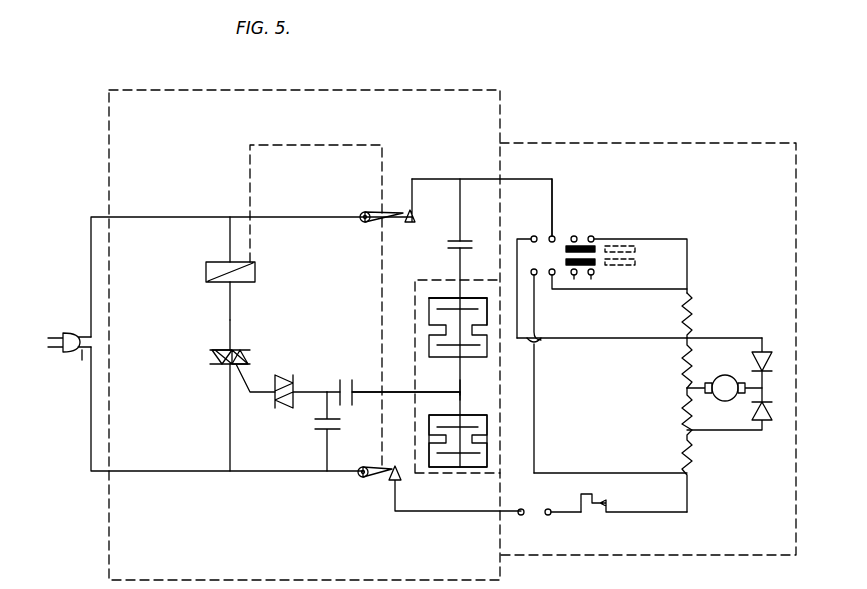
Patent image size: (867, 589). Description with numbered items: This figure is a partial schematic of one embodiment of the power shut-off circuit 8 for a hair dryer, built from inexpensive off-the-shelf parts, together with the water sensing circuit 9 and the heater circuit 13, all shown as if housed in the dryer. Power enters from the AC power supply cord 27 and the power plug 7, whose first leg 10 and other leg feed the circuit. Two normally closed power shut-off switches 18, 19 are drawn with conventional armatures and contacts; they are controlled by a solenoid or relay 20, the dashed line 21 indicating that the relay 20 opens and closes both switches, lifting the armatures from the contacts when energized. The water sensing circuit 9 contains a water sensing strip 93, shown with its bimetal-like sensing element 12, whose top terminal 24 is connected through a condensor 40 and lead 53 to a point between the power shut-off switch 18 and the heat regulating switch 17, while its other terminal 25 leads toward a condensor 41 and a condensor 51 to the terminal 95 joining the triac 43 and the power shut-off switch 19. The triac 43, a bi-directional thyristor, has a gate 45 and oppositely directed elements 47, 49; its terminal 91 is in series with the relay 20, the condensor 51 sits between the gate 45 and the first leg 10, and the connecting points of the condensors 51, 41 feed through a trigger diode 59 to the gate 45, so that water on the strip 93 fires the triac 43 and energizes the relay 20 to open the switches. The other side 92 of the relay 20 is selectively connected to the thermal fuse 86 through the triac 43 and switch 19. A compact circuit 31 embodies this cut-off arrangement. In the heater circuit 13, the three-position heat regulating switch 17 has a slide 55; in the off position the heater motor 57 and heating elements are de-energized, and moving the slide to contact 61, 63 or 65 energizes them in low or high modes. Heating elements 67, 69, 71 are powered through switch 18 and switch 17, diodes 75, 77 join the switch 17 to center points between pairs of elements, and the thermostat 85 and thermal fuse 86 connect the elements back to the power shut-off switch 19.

The power plug 7 is at (68, 333).
The power shut-off circuit 8 is at (503, 114).
The water sensing circuit 9 is at (413, 300).
The first leg of the power plug 10 is at (122, 472).
The bimetal element 12 is at (464, 297).
The heater circuit 13 is at (616, 143).
The heat regulating switch 17 is at (596, 236).
The power shut-off switch 18 is at (395, 212).
The power shut-off switch 19 is at (375, 480).
The relay 20 is at (257, 273).
The dashed line 21 is at (290, 145).
The top terminal of the water sensing strip 24 is at (456, 297).
The terminal of the water sensing circuit 25 is at (462, 388).
The AC power supply cord 27 is at (82, 352).
The circuit 31 is at (355, 380).
The condensor 40 is at (455, 240).
The condensor 41 is at (332, 390).
The triac 43 is at (243, 350).
The gate 45 is at (248, 380).
The element of the triac 47 is at (210, 356).
The element of the triac 49 is at (250, 358).
The condensor 51 is at (316, 416).
The lead 53 is at (553, 182).
The slide 55 is at (594, 276).
The heater motor 57 is at (725, 401).
The trigger diode 59 is at (268, 392).
The contact 61 is at (577, 236).
The contact 63 is at (556, 236).
The contact 65 is at (535, 236).
The heating element 67 is at (696, 330).
The heating element 69 is at (683, 346).
The heating element 71 is at (682, 410).
The diode 75 is at (762, 350).
The diode 77 is at (770, 421).
The thermostat 85 is at (595, 506).
The thermal fuse 86 is at (535, 514).
The terminal of the triac 91 is at (230, 323).
The other side of the solenoid 92 is at (230, 291).
The water sensing strip 93 is at (487, 430).
The terminal 95 is at (325, 478).